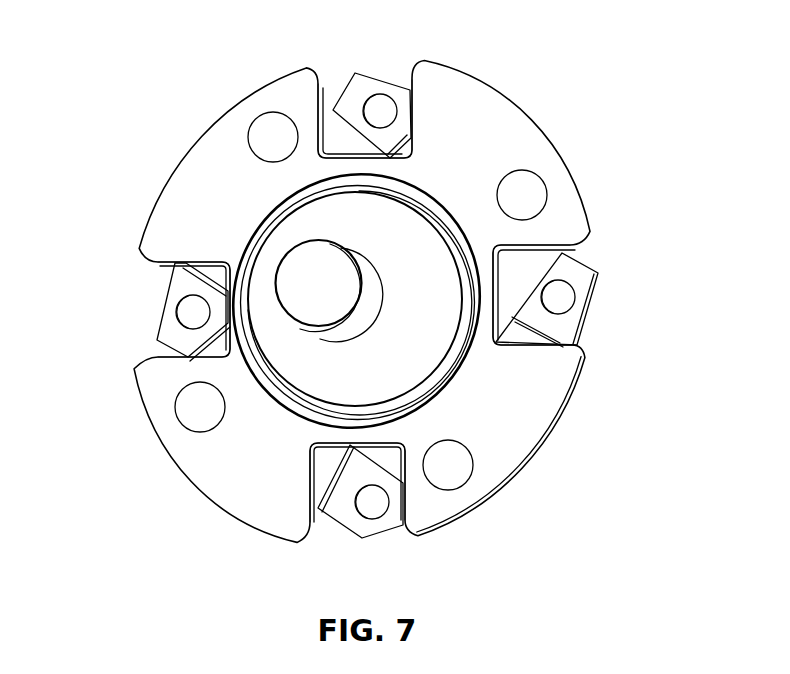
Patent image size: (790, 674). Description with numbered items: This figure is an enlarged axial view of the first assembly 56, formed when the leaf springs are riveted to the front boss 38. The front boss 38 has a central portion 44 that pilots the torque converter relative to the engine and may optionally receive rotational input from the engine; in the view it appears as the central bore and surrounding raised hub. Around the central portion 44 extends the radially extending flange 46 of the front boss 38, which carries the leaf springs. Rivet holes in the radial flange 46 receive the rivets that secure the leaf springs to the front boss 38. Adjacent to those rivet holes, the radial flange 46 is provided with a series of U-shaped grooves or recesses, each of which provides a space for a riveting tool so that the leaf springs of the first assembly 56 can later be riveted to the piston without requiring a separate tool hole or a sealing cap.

The front boss 38 is at (554, 441).
The central portion 44 is at (302, 367).
The radially extending flange 46 is at (383, 302).
The first assembly 56 is at (376, 308).